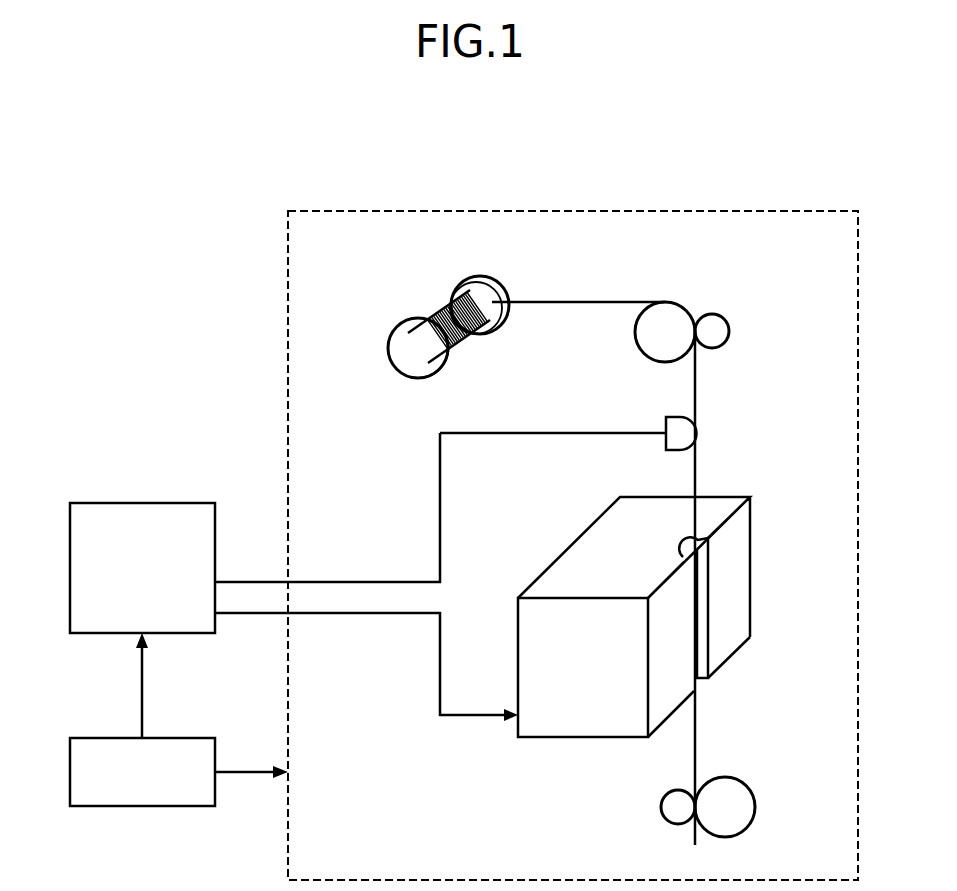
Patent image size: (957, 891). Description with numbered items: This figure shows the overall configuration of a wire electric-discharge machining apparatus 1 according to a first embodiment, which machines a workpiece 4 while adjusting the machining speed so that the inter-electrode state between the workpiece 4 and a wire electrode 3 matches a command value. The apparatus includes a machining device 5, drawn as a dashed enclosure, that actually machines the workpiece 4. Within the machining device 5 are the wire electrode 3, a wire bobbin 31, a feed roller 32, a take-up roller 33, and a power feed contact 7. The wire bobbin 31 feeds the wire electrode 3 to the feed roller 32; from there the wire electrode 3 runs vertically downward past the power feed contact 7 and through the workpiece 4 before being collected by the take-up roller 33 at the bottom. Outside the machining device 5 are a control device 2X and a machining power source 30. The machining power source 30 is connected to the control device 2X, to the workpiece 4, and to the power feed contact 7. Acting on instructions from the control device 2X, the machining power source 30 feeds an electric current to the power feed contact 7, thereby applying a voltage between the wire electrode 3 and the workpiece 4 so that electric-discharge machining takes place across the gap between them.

The wire electric-discharge machining apparatus 1 is at (451, 170).
The machining device 5 is at (721, 211).
The machining power source 30 is at (145, 503).
The control device 2X is at (195, 738).
The wire bobbin 31 is at (410, 352).
The wire electrode 3 is at (696, 385).
The feed roller 32 is at (645, 338).
The power feed contact 7 is at (666, 440).
The workpiece 4 is at (722, 502).
The take-up roller 33 is at (755, 807).